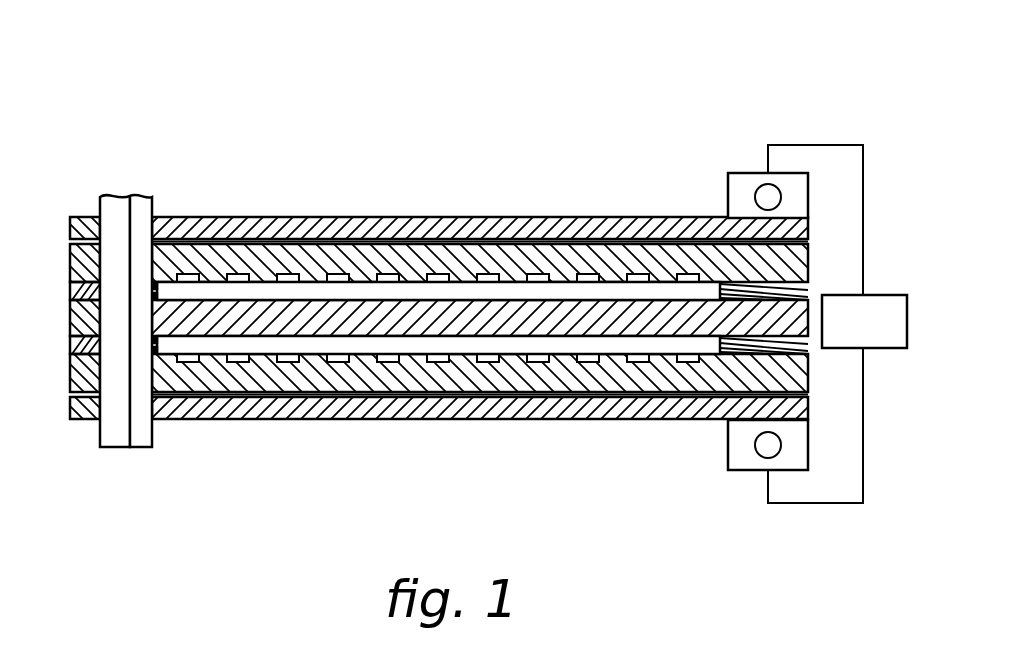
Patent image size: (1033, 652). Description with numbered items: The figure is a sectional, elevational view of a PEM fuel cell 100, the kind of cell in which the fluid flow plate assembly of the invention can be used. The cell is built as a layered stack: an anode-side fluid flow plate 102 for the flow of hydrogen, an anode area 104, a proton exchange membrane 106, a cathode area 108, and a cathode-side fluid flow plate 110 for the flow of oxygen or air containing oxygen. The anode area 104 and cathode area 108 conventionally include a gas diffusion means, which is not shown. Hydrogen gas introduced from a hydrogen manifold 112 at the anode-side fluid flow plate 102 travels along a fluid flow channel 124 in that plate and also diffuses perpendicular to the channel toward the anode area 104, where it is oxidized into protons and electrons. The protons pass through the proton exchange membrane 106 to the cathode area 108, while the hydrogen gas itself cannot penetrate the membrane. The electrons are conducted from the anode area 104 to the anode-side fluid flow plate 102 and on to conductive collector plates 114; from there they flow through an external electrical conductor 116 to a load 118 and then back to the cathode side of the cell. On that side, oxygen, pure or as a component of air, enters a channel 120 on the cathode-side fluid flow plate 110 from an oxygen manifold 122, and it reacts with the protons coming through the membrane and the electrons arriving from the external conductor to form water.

The PEM fuel cell 100 is at (465, 314).
The anode-side fluid flow plate 102 is at (68, 370).
The anode area 104 is at (487, 349).
The proton exchange membrane 106 is at (68, 318).
The cathode area 108 is at (485, 288).
The cathode-side fluid flow plate 110 is at (68, 260).
The hydrogen manifold 112 is at (141, 452).
The conductive collector plate 114 is at (608, 210).
The external electrical conductor 116 is at (830, 144).
The load 118 is at (853, 294).
The channel 120 is at (292, 273).
The oxygen manifold 122 is at (118, 452).
The fluid flow channel 124 is at (388, 365).